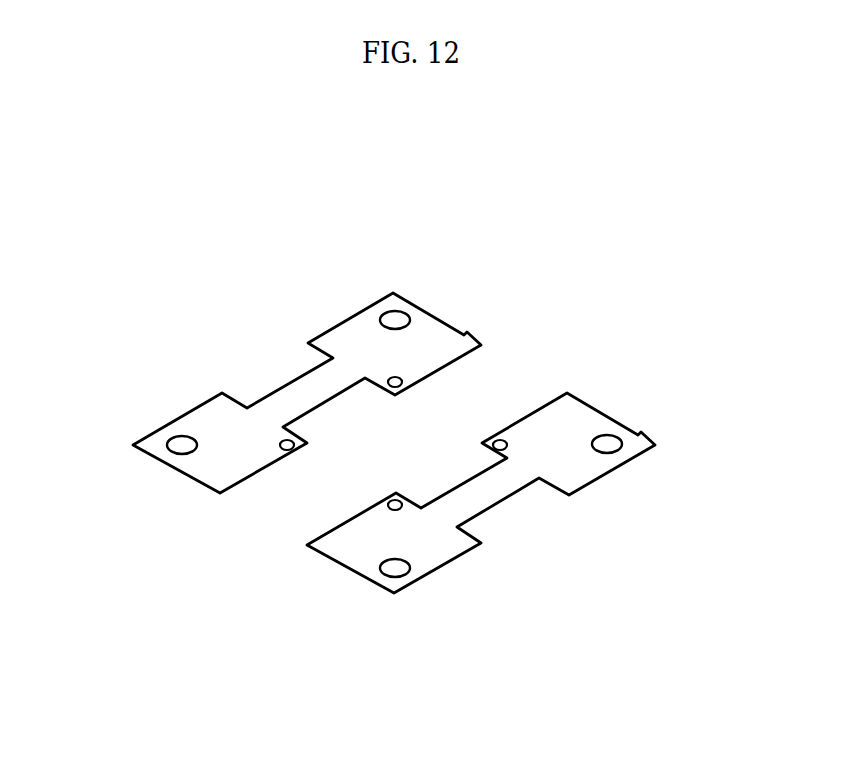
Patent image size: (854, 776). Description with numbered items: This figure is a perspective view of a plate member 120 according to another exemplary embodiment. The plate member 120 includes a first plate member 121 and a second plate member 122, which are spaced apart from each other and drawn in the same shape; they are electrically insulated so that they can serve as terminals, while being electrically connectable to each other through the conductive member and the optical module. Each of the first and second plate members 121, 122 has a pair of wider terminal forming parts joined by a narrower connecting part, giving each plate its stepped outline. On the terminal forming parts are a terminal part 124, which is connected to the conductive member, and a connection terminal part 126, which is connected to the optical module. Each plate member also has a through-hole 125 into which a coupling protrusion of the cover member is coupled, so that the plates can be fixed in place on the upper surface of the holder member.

The plate member 120 is at (394, 515).
The first plate member 121 is at (335, 550).
The second plate member 122 is at (225, 480).
The terminal part 124 is at (395, 318).
The through-hole 125 is at (180, 445).
The connection terminal part 126 is at (500, 440).